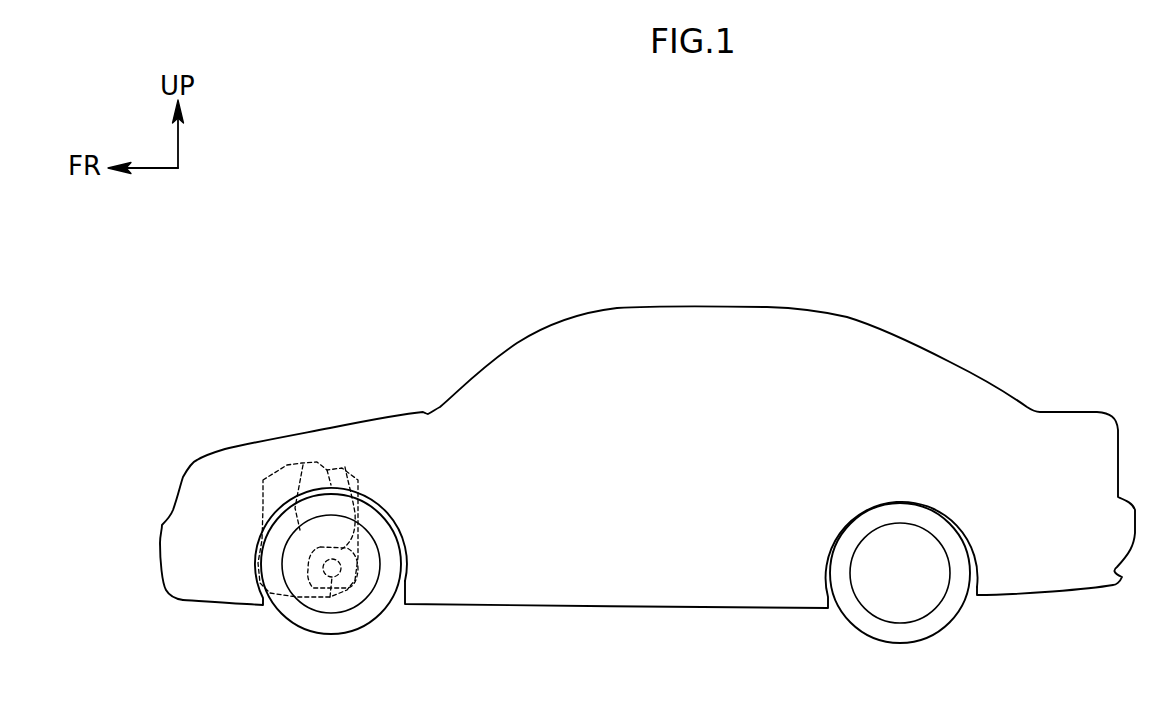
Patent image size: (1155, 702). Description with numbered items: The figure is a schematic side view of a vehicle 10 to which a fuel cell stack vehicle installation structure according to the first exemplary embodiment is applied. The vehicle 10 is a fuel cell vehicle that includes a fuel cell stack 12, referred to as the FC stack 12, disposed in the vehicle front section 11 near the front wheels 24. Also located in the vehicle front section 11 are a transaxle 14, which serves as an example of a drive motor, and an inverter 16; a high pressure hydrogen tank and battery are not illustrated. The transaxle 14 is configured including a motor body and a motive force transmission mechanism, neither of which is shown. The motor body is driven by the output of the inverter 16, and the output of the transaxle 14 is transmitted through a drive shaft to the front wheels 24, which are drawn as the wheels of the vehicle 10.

The vehicle 10 is at (808, 207).
The vehicle front section 11 is at (288, 392).
The fuel cell stack 12 is at (345, 467).
The transaxle 14 is at (330, 597).
The inverter 16 is at (263, 480).
The front wheels 24 is at (367, 628).